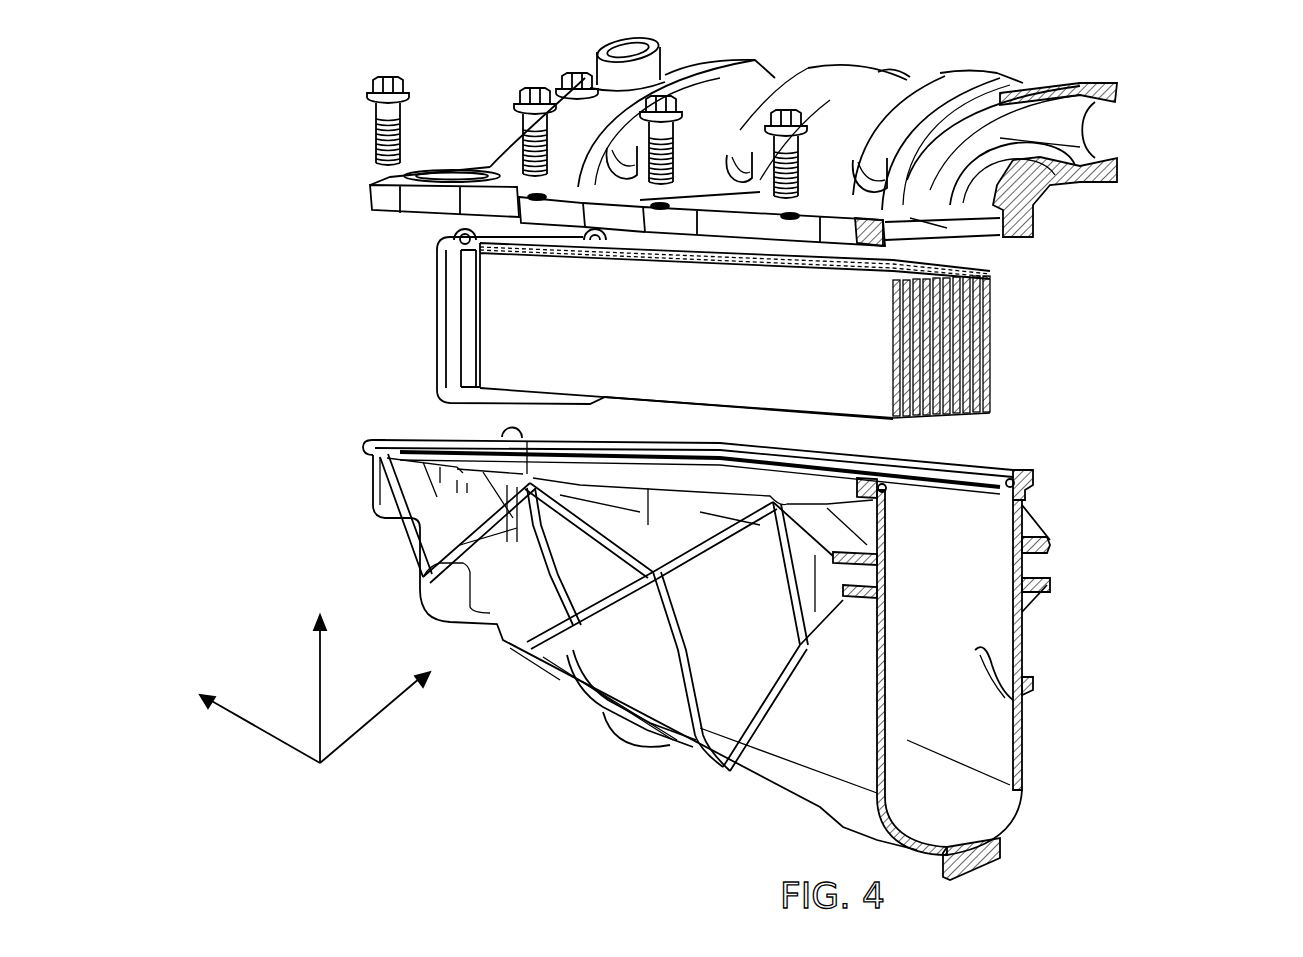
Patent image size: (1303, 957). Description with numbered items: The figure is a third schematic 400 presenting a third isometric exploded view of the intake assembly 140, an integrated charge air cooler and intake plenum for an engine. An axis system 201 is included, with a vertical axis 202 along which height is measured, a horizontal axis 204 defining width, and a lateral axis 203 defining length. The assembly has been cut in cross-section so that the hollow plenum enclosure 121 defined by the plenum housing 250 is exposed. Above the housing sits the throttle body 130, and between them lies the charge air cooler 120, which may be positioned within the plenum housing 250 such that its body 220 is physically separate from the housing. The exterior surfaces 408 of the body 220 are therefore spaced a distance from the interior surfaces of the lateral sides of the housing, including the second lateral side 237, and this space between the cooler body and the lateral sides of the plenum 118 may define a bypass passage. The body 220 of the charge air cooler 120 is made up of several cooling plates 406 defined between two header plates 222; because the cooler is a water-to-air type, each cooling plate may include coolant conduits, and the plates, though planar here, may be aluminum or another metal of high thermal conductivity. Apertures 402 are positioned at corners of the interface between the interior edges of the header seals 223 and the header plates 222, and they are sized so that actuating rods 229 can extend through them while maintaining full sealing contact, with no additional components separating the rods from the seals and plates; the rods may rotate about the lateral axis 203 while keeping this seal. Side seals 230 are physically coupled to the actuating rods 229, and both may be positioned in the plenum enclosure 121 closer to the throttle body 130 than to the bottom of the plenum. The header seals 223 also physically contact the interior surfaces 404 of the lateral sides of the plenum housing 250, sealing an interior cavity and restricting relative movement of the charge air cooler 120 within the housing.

The third schematic 400 is at (1220, 114).
The throttle body 130 is at (1137, 98).
The intake assembly 140 is at (277, 180).
The charge air cooler 120 is at (1063, 268).
The body 220 is at (706, 345).
The header plates 222 is at (467, 310).
The header seals 223 is at (438, 357).
The apertures 402 is at (456, 241).
The cooling plates 406 is at (973, 307).
The exterior surfaces 408 is at (870, 392).
The plenum 118 is at (1175, 268).
The actuating rods 229 is at (1018, 470).
The side seals 230 is at (1023, 502).
The interior surfaces 404 is at (990, 617).
The plenum housing 250 is at (753, 682).
The second lateral side 237 is at (657, 650).
The plenum enclosure 121 is at (953, 800).
The axis system 201 is at (343, 766).
The vertical axis 202 is at (323, 683).
The lateral axis 203 is at (258, 727).
The horizontal axis 204 is at (373, 725).